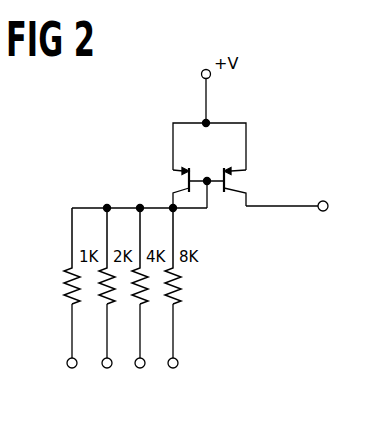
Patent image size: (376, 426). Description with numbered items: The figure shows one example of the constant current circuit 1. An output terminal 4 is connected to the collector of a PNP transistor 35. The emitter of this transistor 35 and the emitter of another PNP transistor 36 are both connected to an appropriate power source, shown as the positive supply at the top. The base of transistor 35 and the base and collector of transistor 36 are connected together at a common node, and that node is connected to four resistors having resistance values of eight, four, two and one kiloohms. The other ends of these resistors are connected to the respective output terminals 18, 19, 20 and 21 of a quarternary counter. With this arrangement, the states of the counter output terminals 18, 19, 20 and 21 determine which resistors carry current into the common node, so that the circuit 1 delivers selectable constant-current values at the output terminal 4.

The constant current circuit 1 is at (230, 151).
The output terminal 4 is at (326, 201).
The output terminal of quarternary counter 18 is at (172, 368).
The output terminal of quarternary counter 19 is at (139, 368).
The output terminal of quarternary counter 20 is at (106, 368).
The output terminal of quarternary counter 21 is at (71, 368).
The PNP transistor 35 is at (287, 133).
The PNP transistor 36 is at (181, 171).